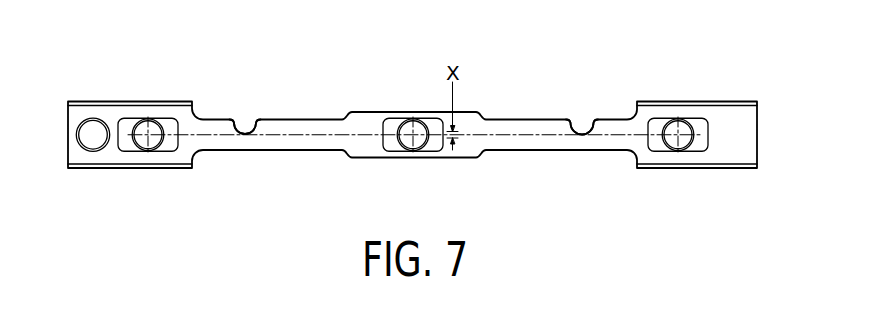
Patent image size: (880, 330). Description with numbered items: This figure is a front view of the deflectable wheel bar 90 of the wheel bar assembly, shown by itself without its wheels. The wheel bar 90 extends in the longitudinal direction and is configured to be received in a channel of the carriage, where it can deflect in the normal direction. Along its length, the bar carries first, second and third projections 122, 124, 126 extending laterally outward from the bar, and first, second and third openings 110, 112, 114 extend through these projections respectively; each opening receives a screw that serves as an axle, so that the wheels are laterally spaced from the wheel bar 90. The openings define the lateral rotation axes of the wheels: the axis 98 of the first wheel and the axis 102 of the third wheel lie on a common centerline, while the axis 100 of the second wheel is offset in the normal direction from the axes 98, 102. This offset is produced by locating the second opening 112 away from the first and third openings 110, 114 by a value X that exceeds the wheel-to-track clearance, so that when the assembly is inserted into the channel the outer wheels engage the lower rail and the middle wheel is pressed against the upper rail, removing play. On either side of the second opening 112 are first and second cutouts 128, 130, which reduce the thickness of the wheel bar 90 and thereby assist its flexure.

The deflectable wheel bar 90 is at (735, 112).
The axis 98 is at (148, 136).
The axis 100 is at (413, 134).
The axis 102 is at (676, 137).
The first opening 110 is at (140, 150).
The second opening 112 is at (427, 148).
The third opening 114 is at (694, 147).
The first projection 122 is at (168, 127).
The second projection 124 is at (391, 146).
The third projection 126 is at (701, 137).
The first cutout 128 is at (244, 133).
The second cutout 130 is at (587, 132).